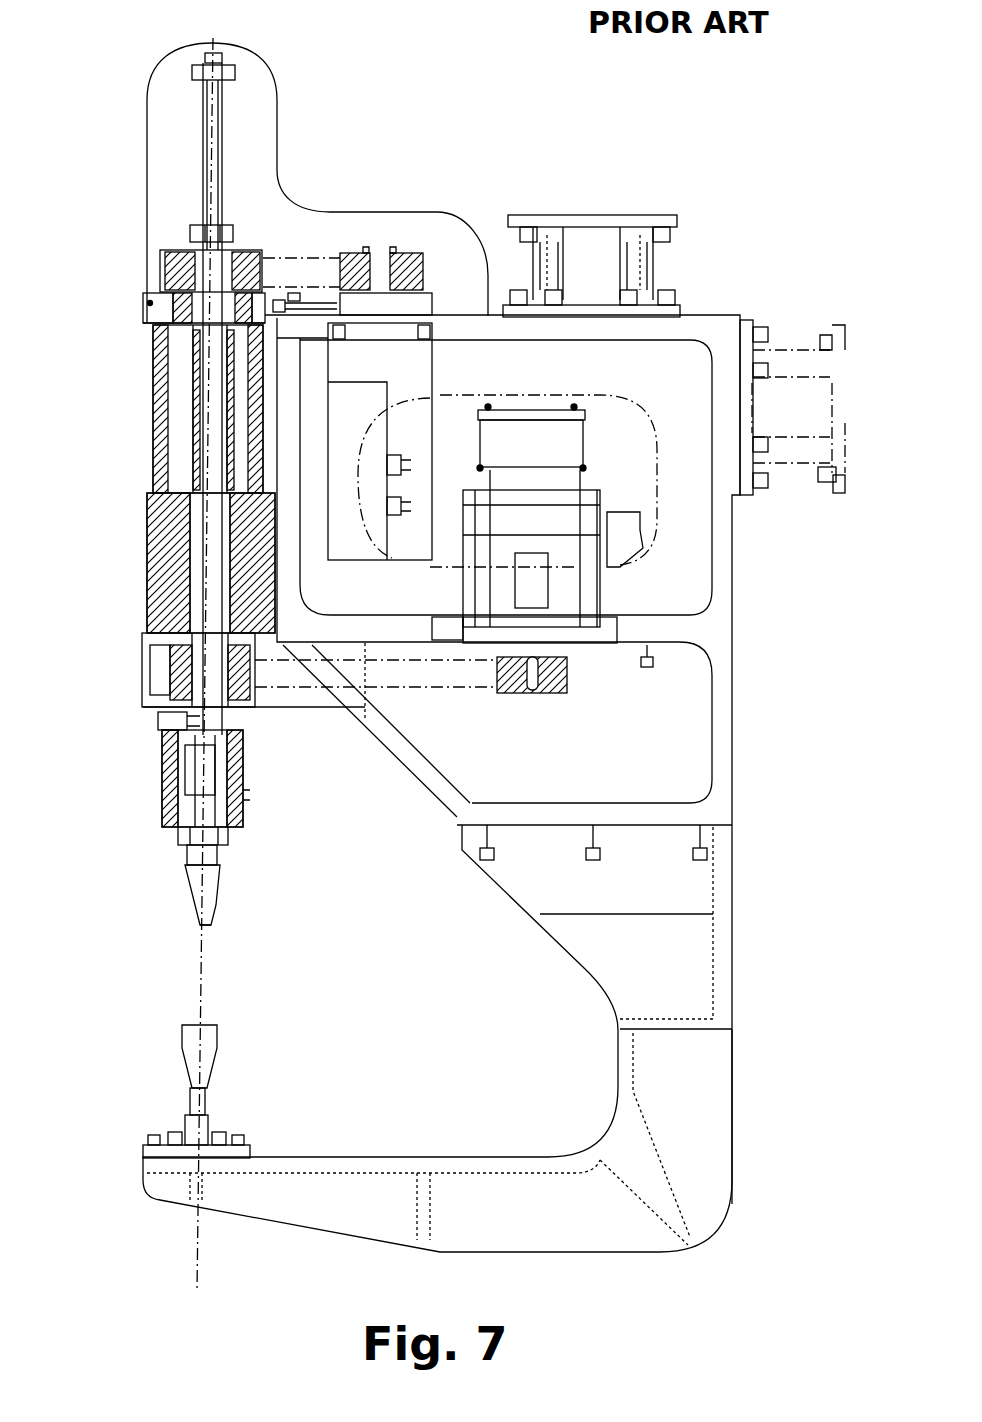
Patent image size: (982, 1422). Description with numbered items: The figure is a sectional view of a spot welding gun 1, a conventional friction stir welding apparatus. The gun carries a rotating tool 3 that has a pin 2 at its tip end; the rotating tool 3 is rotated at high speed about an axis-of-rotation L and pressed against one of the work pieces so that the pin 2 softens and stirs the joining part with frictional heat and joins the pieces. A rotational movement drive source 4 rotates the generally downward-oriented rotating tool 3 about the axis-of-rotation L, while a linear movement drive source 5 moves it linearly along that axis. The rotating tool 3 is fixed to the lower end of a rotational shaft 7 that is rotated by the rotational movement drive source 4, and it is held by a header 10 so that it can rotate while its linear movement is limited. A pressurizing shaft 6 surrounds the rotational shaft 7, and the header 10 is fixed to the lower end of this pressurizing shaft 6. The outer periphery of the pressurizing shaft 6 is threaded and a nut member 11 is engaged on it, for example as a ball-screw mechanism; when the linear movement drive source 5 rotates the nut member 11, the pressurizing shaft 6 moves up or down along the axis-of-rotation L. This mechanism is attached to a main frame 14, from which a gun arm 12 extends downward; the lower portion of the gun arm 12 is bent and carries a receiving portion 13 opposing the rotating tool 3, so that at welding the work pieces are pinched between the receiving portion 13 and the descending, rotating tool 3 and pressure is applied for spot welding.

The spot welding gun 1 is at (618, 123).
The pin 2 is at (206, 928).
The rotating tool 3 is at (190, 885).
The rotational movement drive source 4 is at (417, 367).
The linear movement drive source 5 is at (562, 592).
The pressurizing shaft 6 is at (167, 548).
The rotational shaft 7 is at (210, 190).
The header 10 is at (165, 780).
The nut member 11 is at (163, 618).
The gun arm 12 is at (712, 968).
The receiving portion 13 is at (203, 1125).
The main frame 14 is at (722, 530).
The axis-of-rotation L is at (200, 985).